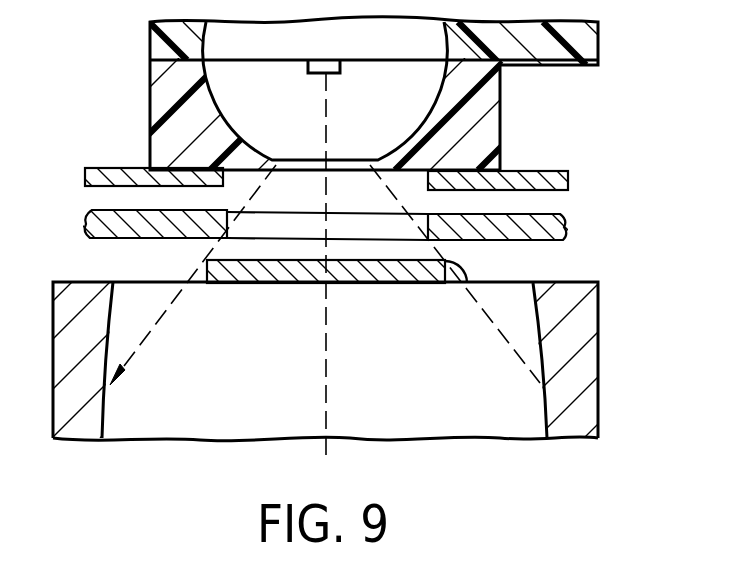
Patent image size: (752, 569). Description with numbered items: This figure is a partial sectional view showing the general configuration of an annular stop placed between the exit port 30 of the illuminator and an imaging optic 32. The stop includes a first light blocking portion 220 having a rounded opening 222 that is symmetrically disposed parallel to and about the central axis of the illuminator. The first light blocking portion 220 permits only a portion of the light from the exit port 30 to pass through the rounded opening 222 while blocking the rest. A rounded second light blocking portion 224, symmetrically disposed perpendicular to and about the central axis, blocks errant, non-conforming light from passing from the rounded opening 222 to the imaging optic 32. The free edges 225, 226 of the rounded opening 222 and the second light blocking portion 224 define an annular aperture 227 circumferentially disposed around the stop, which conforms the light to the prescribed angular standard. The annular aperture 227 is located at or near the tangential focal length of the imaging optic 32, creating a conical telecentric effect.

The exit port 30 is at (338, 163).
The imaging optic 32 is at (585, 331).
The first light blocking portion 220 is at (356, 233).
The rounded opening 222 is at (392, 233).
The second light blocking portion 224 is at (408, 286).
The free edge of the rounded opening 225 is at (430, 236).
The free edge of the second light blocking portion 226 is at (471, 286).
The annular aperture 227 is at (420, 250).